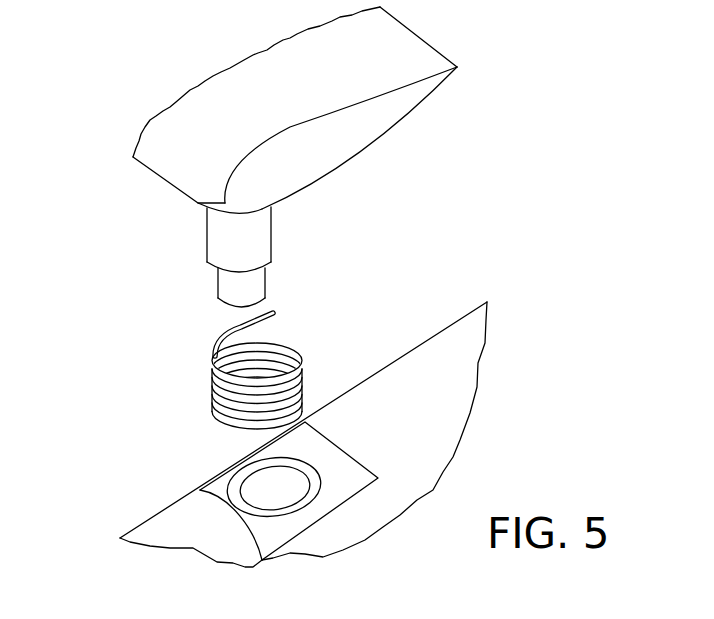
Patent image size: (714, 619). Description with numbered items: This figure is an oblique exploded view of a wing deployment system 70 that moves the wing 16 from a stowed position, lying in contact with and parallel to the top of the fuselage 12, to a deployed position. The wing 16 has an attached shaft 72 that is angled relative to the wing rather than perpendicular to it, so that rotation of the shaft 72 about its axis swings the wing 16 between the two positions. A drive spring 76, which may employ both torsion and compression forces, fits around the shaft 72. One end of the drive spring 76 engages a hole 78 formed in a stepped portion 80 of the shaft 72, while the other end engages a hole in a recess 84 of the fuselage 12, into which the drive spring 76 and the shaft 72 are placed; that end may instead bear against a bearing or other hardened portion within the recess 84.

The wing 16 is at (157, 152).
The shaft 72 is at (257, 232).
The stepped portion 80 is at (200, 267).
The hole 78 is at (270, 268).
The wing deployment system 70 is at (231, 371).
The drive spring 76 is at (290, 355).
The fuselage 12 is at (450, 383).
The recess 84 is at (240, 475).